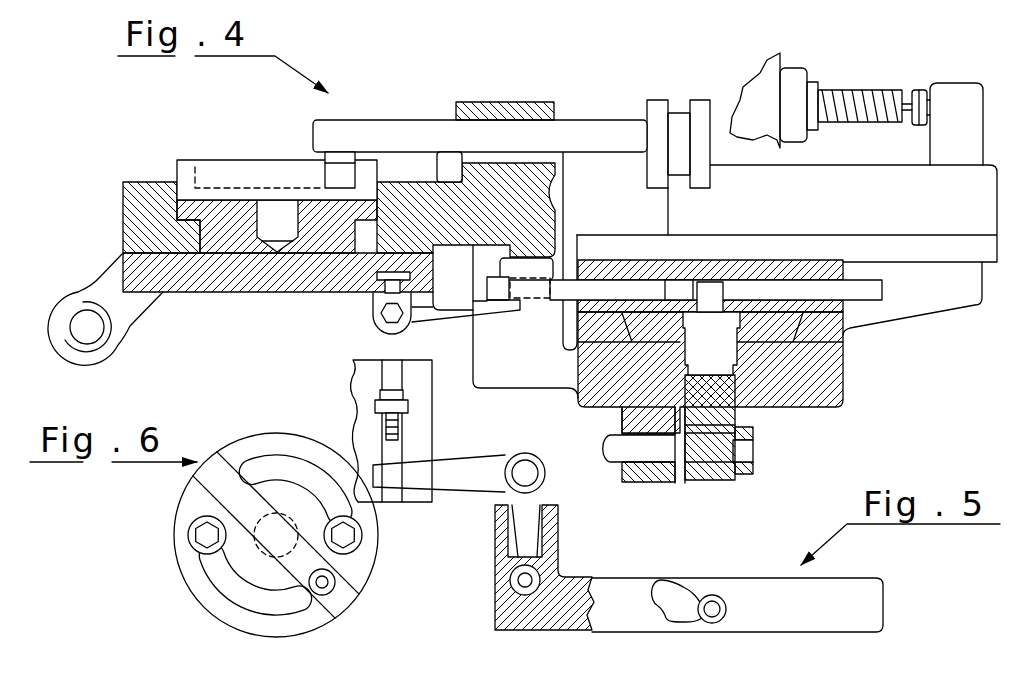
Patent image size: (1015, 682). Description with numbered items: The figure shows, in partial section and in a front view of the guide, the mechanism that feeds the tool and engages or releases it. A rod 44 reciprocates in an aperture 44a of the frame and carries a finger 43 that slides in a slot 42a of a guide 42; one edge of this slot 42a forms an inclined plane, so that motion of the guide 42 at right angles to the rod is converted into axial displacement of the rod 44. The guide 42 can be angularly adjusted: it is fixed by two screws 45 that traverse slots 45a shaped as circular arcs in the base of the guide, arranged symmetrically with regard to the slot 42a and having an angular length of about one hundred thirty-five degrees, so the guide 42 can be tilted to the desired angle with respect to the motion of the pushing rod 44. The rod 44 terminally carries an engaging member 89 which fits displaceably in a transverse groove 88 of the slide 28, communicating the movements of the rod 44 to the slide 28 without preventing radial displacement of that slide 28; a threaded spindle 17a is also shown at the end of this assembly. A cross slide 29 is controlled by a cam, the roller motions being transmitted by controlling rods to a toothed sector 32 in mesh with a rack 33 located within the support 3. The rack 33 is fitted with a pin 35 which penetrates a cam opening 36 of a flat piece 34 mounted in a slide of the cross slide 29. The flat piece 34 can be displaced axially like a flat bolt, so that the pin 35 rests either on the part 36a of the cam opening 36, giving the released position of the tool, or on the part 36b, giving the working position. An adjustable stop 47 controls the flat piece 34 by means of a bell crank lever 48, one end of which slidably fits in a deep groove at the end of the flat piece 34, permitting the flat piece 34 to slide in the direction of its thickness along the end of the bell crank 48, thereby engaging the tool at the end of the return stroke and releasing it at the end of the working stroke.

In FIG. 4, the support 3 is at (827, 397).
In FIG. 4, the threaded spindle with bracket 17a is at (824, 88).
In FIG. 4, the slide 28 is at (787, 213).
In FIG. 4, the cross slide 29 is at (847, 331).
In FIG. 4, the toothed sector 32 is at (737, 412).
In FIG. 4, the rack 33 is at (723, 350).
In FIG. 4, the flat piece 34 is at (873, 291).
In FIG. 5, the flat piece 34 is at (610, 600).
In FIG. 4, the pin 35 is at (726, 279).
In FIG. 5, the pin 35 is at (714, 603).
In FIG. 4, the cam opening 36 is at (680, 287).
In FIG. 5, the cam opening 36 is at (683, 604).
In FIG. 5, the part of cam opening 36a is at (728, 602).
In FIG. 5, the part of cam opening 36b is at (668, 580).
In FIG. 4, the guide 42 is at (222, 172).
In FIG. 6, the guide 42 is at (250, 450).
In FIG. 4, the slot 42a is at (358, 176).
In FIG. 6, the slot 42a is at (342, 598).
In FIG. 4, the finger 43 is at (346, 158).
In FIG. 6, the finger 43 is at (336, 578).
In FIG. 4, the rod 44 is at (425, 135).
In FIG. 4, the aperture 44a is at (528, 118).
In FIG. 6, the screws 45 is at (200, 550).
In FIG. 6, the slots in the form of circular arcs 45a is at (345, 505).
In FIG. 4, the adjustable stop 47 is at (380, 303).
In FIG. 6, the adjustable stop 47 is at (398, 410).
In FIG. 4, the bell crank lever 48 is at (460, 316).
In FIG. 6, the bell crank lever 48 is at (466, 470).
In FIG. 4, the transverse groove 88 is at (712, 190).
In FIG. 4, the engaging member 89 is at (708, 90).